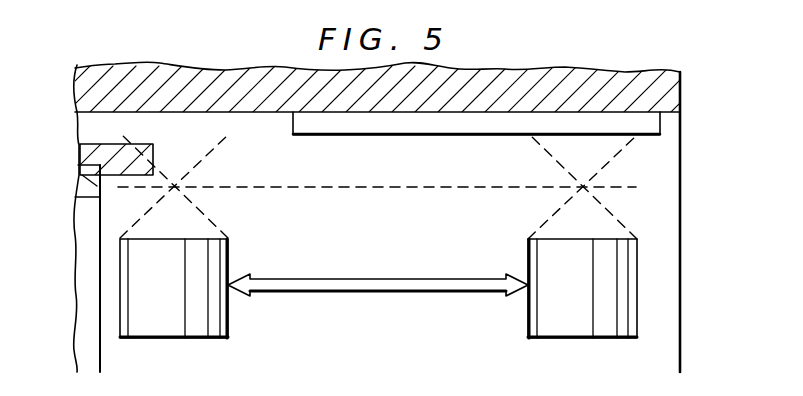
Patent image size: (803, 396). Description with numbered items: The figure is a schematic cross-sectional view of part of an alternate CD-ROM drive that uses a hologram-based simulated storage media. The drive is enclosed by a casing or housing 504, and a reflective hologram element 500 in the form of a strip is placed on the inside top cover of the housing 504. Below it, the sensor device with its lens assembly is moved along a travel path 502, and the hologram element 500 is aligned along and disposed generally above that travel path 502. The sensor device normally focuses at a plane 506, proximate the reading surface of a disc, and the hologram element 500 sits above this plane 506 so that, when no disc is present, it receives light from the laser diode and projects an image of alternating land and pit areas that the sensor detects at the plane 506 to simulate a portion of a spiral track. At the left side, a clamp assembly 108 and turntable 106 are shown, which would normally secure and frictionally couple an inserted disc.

The turntable 106 is at (80, 311).
The clamp assembly 108 is at (80, 162).
The hologram element 500 is at (477, 128).
The travel path 502 is at (400, 277).
The housing 504 is at (681, 82).
The plane 506 is at (347, 188).